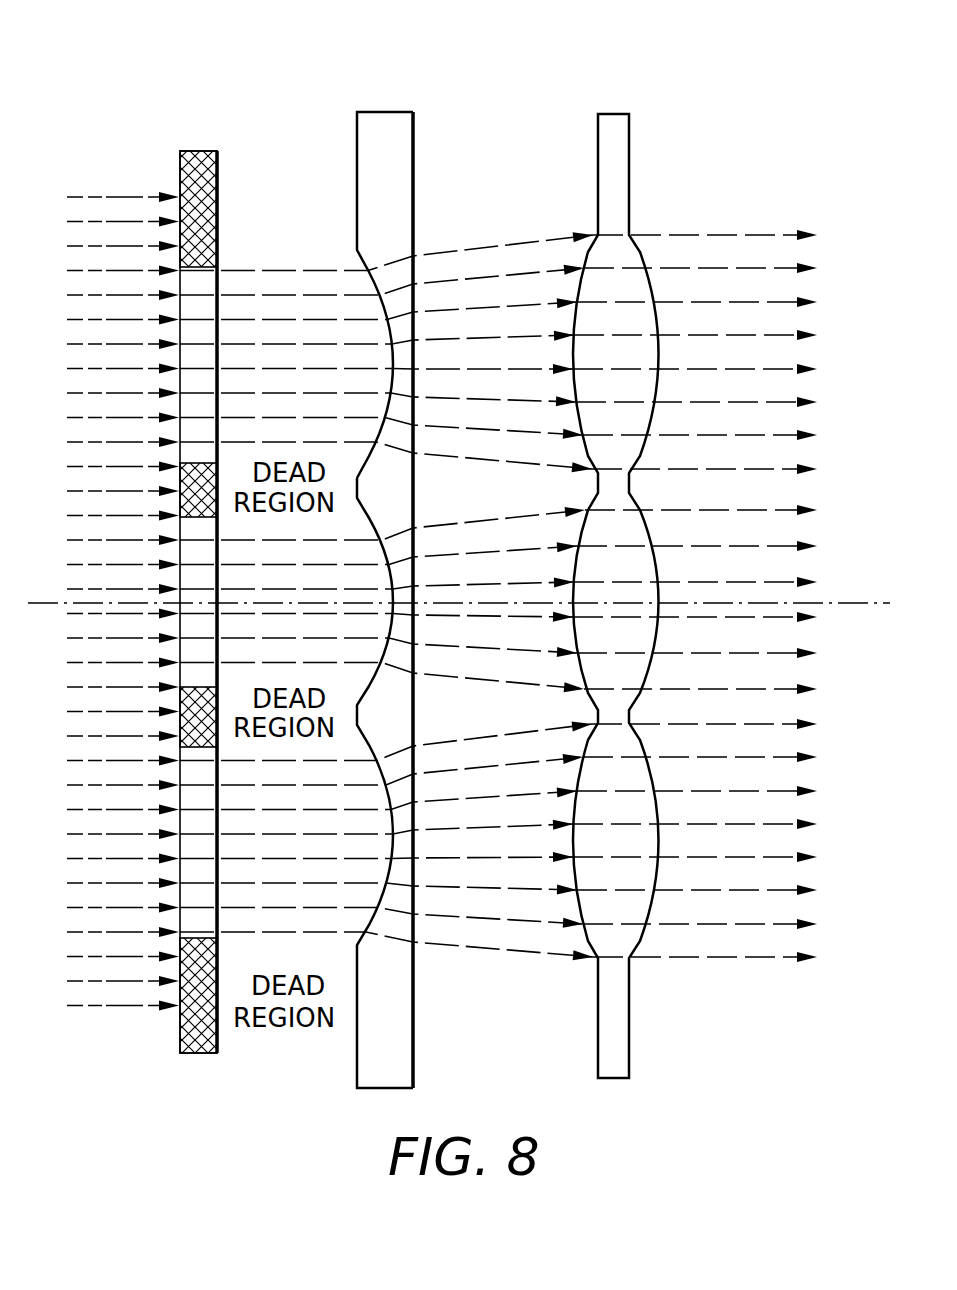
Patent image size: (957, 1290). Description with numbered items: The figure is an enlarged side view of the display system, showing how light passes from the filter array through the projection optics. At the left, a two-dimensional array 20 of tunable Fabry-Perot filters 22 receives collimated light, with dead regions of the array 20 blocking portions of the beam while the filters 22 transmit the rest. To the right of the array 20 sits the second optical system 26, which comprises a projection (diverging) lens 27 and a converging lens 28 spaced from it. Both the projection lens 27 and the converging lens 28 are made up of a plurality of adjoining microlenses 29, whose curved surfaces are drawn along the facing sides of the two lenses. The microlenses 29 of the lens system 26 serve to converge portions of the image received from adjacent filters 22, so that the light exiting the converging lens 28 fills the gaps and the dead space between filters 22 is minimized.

The two-dimensional array 20 is at (197, 150).
The tunable Fabry-Perot filter 22 is at (208, 282).
The second optical system 26 is at (655, 88).
The projection (diverging) lens 27 is at (396, 600).
The converging lens 28 is at (608, 156).
The microlens 29 is at (347, 261).